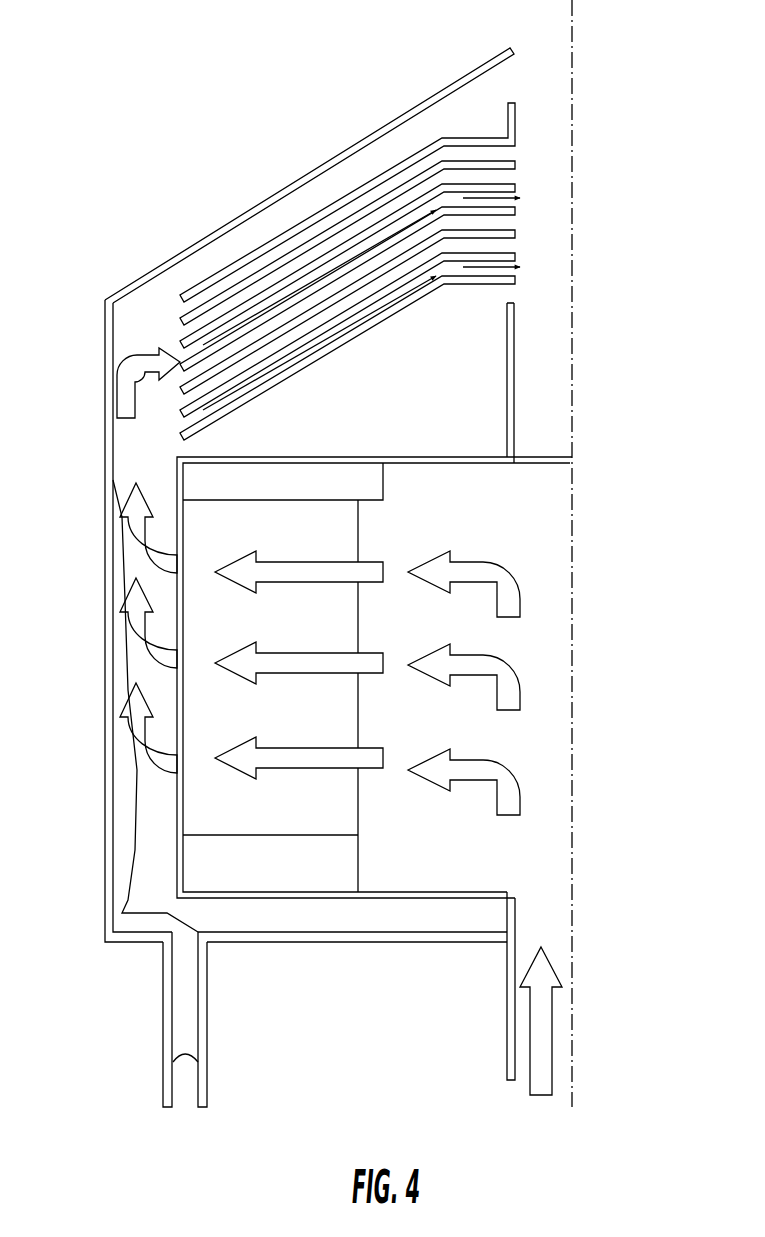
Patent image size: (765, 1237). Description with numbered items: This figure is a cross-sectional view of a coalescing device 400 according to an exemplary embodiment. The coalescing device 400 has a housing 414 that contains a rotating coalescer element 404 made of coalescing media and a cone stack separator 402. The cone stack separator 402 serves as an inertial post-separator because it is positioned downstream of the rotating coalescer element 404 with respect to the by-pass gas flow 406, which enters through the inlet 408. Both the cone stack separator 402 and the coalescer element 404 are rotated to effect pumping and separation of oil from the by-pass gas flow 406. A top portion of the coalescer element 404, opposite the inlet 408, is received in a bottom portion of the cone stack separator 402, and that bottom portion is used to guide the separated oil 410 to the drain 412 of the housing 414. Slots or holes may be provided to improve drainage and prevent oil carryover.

The coalescing device 400 is at (170, 66).
The cone stack separator 402 is at (516, 289).
The rotating coalescer element 404 is at (305, 627).
The by-pass gas flow 406 is at (520, 600).
The inlet 408 is at (566, 1080).
The oil 410 is at (123, 857).
The drain 412 is at (194, 964).
The housing 414 is at (238, 212).